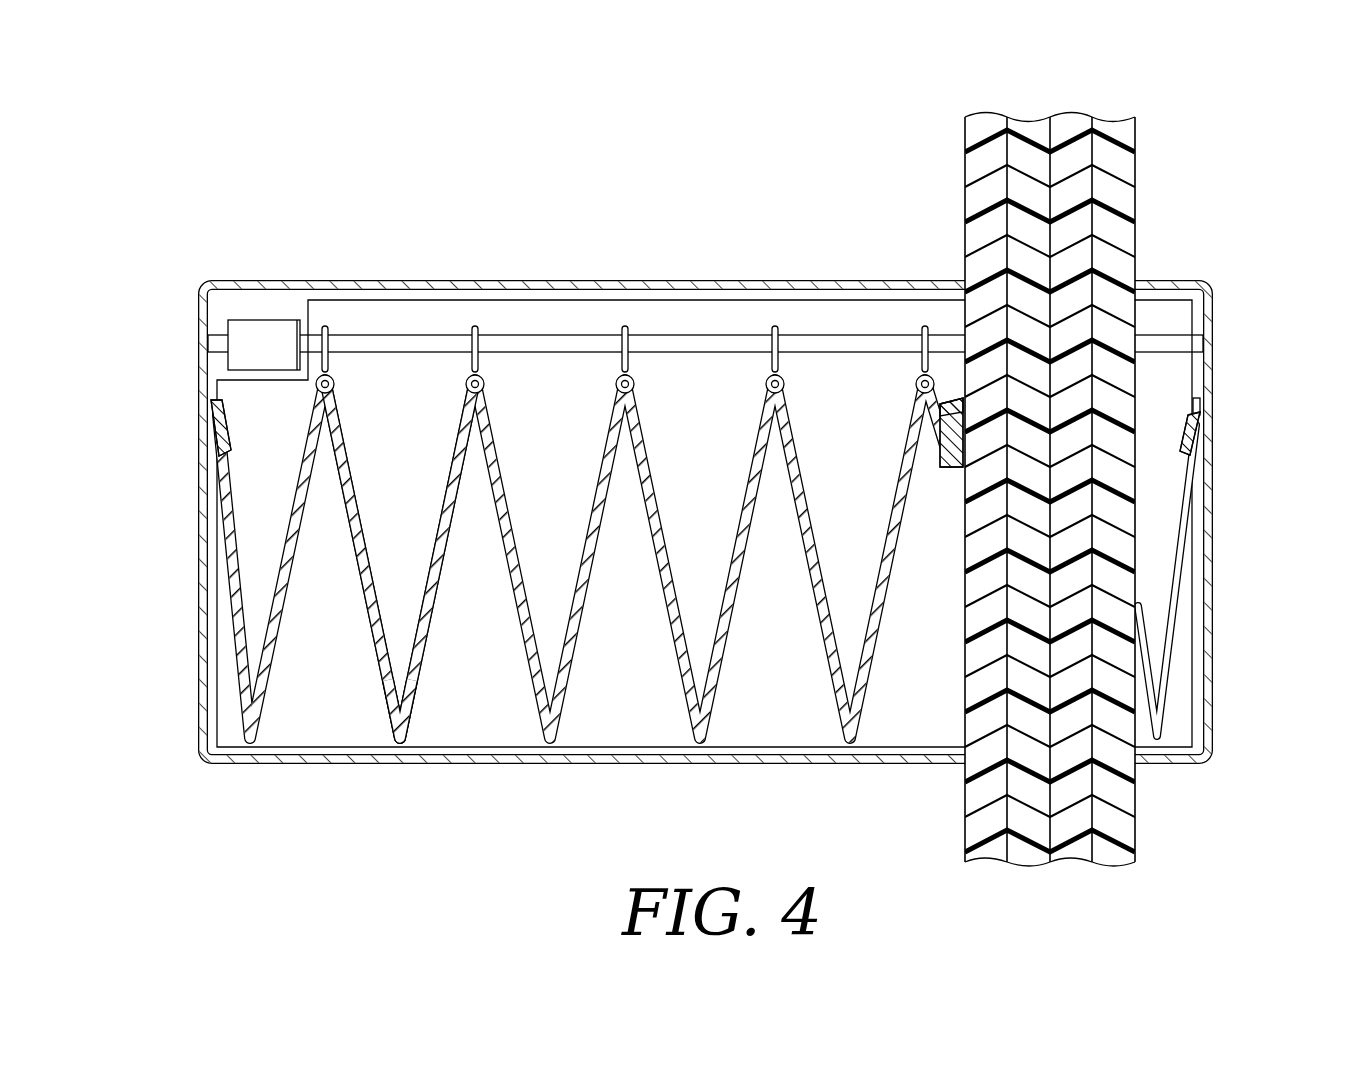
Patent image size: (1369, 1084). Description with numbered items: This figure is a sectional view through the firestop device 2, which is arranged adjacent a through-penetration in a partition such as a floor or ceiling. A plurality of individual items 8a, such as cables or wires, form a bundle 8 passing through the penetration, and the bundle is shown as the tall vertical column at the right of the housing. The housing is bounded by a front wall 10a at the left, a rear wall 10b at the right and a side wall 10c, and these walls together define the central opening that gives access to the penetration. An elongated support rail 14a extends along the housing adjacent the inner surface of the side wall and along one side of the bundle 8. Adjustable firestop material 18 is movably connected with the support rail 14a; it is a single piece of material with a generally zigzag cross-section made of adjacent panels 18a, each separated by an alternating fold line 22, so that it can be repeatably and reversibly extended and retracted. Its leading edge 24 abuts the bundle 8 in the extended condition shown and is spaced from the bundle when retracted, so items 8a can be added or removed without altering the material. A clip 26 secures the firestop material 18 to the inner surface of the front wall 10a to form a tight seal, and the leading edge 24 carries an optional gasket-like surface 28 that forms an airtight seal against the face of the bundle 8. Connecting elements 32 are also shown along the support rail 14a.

The firestop device 2 is at (372, 225).
The bundle 8 is at (1090, 449).
The individual items 8a is at (1067, 120).
The front wall 10a is at (198, 640).
The rear wall 10b is at (1213, 570).
The side wall 10c is at (572, 448).
The support rail 14a is at (550, 343).
The adjustable firestop material 18 is at (707, 608).
The panels 18a is at (452, 490).
The fold line 22 is at (403, 747).
The leading edge 24 is at (903, 375).
The clip 26 is at (225, 430).
The gasket-like surface 28 is at (958, 400).
The pins 32 is at (768, 335).